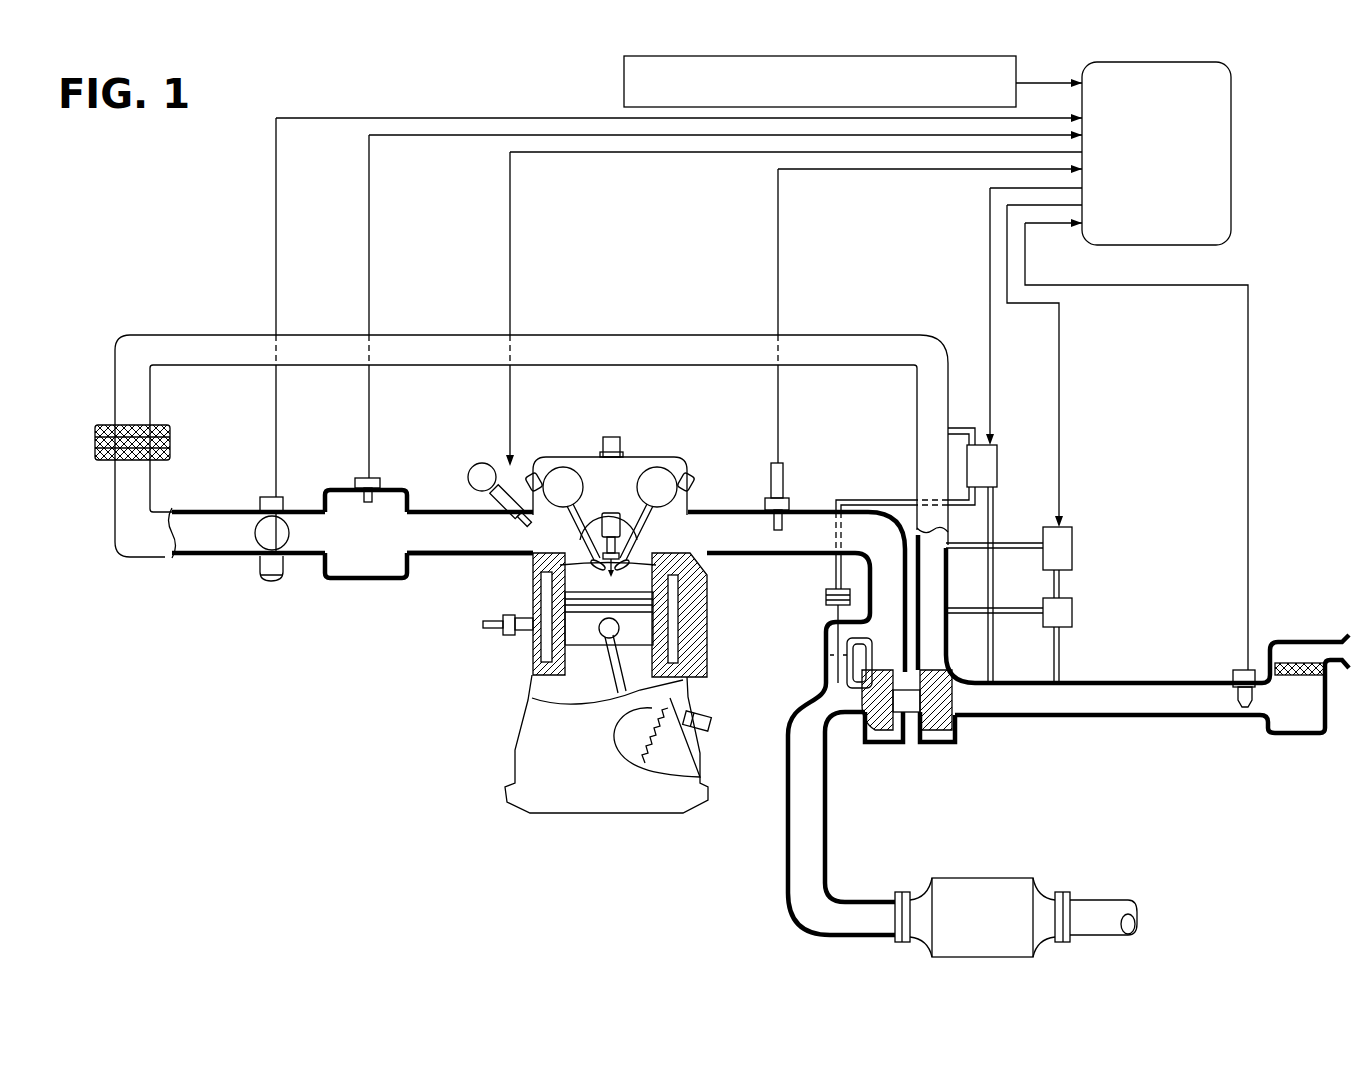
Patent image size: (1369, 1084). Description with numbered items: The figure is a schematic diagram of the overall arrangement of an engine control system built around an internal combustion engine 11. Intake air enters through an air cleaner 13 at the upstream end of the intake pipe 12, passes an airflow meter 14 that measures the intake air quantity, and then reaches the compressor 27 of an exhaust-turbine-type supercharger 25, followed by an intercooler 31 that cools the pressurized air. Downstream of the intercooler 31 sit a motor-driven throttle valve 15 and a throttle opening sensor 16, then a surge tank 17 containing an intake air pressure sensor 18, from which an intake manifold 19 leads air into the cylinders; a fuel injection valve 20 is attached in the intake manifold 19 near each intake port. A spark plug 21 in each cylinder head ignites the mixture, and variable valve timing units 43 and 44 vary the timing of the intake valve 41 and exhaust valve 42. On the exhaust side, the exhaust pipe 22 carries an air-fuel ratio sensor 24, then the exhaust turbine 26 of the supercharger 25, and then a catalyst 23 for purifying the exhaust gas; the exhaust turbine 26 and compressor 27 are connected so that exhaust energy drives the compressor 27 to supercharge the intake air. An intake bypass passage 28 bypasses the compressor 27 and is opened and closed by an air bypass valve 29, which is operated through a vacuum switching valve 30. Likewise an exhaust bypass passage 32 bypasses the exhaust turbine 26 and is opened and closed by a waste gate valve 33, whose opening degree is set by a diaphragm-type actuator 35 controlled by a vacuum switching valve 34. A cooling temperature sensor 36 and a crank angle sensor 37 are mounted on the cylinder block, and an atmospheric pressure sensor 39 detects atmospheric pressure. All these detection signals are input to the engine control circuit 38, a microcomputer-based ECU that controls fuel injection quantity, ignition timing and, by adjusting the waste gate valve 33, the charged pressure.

The engine 11 is at (508, 713).
The intake pipe 12 is at (1152, 730).
The air cleaner 13 is at (1303, 663).
The airflow meter 14 is at (1237, 668).
The throttle valve 15 is at (283, 540).
The throttle opening sensor 16 is at (268, 497).
The surge tank 17 is at (395, 490).
The intake air pressure sensor 18 is at (360, 478).
The intake manifold 19 is at (445, 558).
The fuel injection valve 20 is at (470, 488).
The spark plug 21 is at (612, 540).
The exhaust pipe 22 is at (735, 512).
The catalyst 23 is at (1010, 878).
The air-fuel ratio sensor 24 is at (792, 475).
The supercharger 25 is at (936, 755).
The exhaust turbine 26 is at (850, 727).
The compressor 27 is at (936, 750).
The intake bypass passage 28 is at (1062, 652).
The air bypass valve 29 is at (1073, 618).
The vacuum switching valve for ABV 30 is at (1073, 548).
The intercooler 31 is at (170, 445).
The exhaust bypass passage 32 is at (823, 637).
The waste gate valve 33 is at (824, 672).
The vacuum switching valve for WGV 34 is at (998, 460).
The actuator 35 is at (824, 593).
The cooling temperature sensor 36 is at (512, 635).
The crank angle sensor 37 is at (712, 722).
The engine control circuit 38 is at (1232, 158).
The atmospheric pressure sensor 39 is at (624, 80).
The intake valve 41 is at (542, 574).
The exhaust valve 42 is at (695, 578).
The variable valve timing unit 43 is at (563, 470).
The variable valve timing unit 44 is at (660, 472).